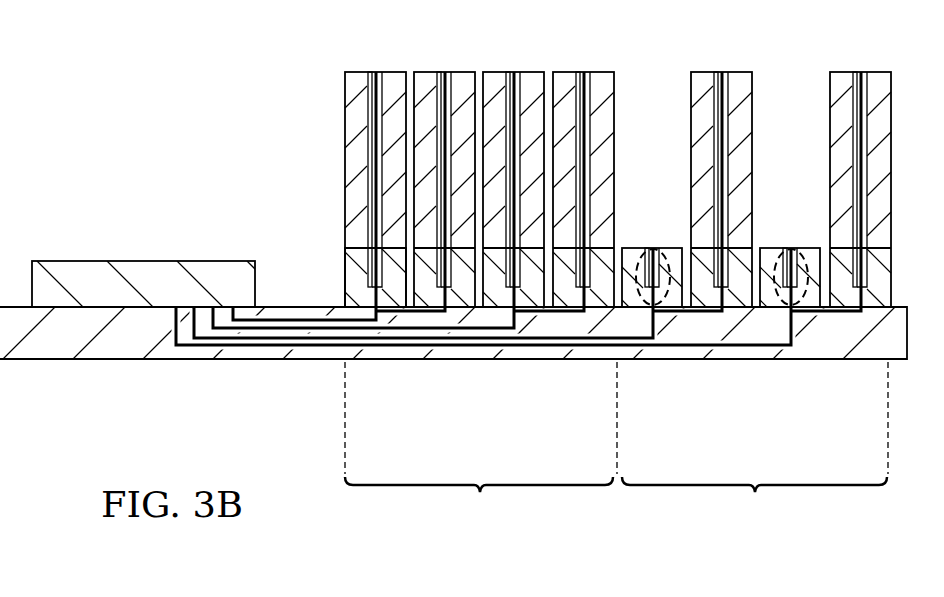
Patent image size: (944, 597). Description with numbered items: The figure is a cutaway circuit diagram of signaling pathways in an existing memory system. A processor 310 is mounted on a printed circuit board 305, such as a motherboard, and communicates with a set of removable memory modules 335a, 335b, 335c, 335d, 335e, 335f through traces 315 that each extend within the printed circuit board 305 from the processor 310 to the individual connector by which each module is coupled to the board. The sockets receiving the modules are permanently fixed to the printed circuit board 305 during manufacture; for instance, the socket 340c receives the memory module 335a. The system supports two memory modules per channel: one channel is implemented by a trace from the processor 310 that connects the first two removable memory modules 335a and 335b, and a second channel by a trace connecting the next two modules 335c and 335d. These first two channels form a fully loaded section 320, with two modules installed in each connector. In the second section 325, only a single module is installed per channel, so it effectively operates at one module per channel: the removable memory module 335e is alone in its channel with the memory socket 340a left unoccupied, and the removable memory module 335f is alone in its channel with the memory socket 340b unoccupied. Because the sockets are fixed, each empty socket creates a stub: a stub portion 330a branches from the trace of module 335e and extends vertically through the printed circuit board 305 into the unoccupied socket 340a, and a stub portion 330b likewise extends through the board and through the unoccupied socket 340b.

The printed circuit board 305 is at (48, 350).
The processor 310 is at (80, 272).
The traces 315 is at (474, 340).
The fully loaded section 320 is at (481, 471).
The second section 325 is at (755, 471).
The stub portion 330a is at (633, 310).
The stub portion 330b is at (773, 310).
The removable memory module 335a is at (353, 165).
The removable memory module 335b is at (425, 80).
The removable memory module 335c is at (530, 80).
The removable memory module 335d is at (602, 80).
The removable memory module 335e is at (738, 80).
The removable memory module 335f is at (877, 80).
The memory socket 340a is at (668, 247).
The memory socket 340b is at (808, 247).
The socket 340c is at (347, 278).